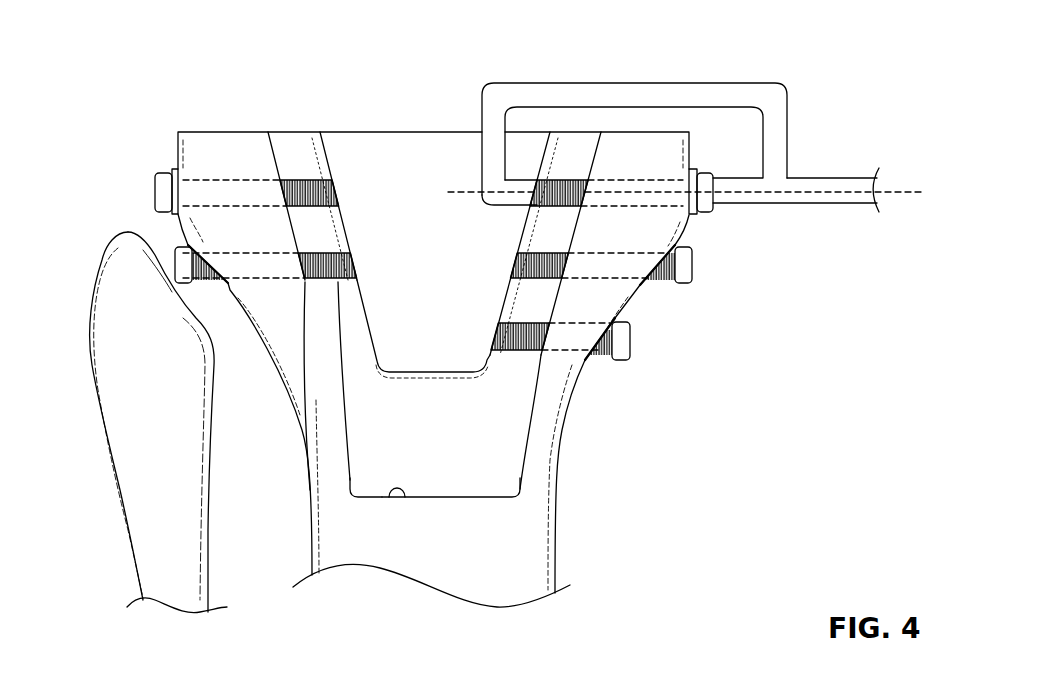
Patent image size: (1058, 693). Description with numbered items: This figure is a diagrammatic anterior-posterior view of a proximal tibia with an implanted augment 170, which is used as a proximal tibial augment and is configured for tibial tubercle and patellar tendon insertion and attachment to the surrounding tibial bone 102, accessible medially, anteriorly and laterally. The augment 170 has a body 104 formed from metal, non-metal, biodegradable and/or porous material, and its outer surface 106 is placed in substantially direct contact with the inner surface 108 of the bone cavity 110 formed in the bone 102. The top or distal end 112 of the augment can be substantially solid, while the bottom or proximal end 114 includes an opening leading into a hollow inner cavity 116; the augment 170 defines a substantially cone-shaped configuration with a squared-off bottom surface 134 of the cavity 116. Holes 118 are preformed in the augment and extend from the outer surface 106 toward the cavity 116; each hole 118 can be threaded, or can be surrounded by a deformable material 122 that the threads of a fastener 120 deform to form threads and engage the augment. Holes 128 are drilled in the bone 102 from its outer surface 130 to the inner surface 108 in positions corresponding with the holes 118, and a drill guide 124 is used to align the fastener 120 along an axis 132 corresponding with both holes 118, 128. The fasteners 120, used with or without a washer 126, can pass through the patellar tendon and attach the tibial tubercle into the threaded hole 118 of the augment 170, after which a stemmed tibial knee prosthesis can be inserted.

The bone 102 is at (560, 497).
The body 104 is at (508, 430).
The outer surface 106 is at (285, 220).
The inner surface 108 is at (389, 497).
The bone cavity 110 is at (350, 502).
The distal end 112 is at (485, 509).
The proximal end 114 is at (287, 129).
The inner cavity 116 is at (356, 160).
The holes 118 is at (322, 283).
The fastener 120 is at (693, 268).
The deformable material 122 is at (338, 283).
The drill guide 124 is at (638, 82).
The washer 126 is at (678, 246).
The holes 128 is at (570, 328).
The outer surface 130 is at (556, 532).
The axis 132 is at (903, 188).
The bottom surface 134 is at (438, 370).
The augment 170 is at (503, 387).